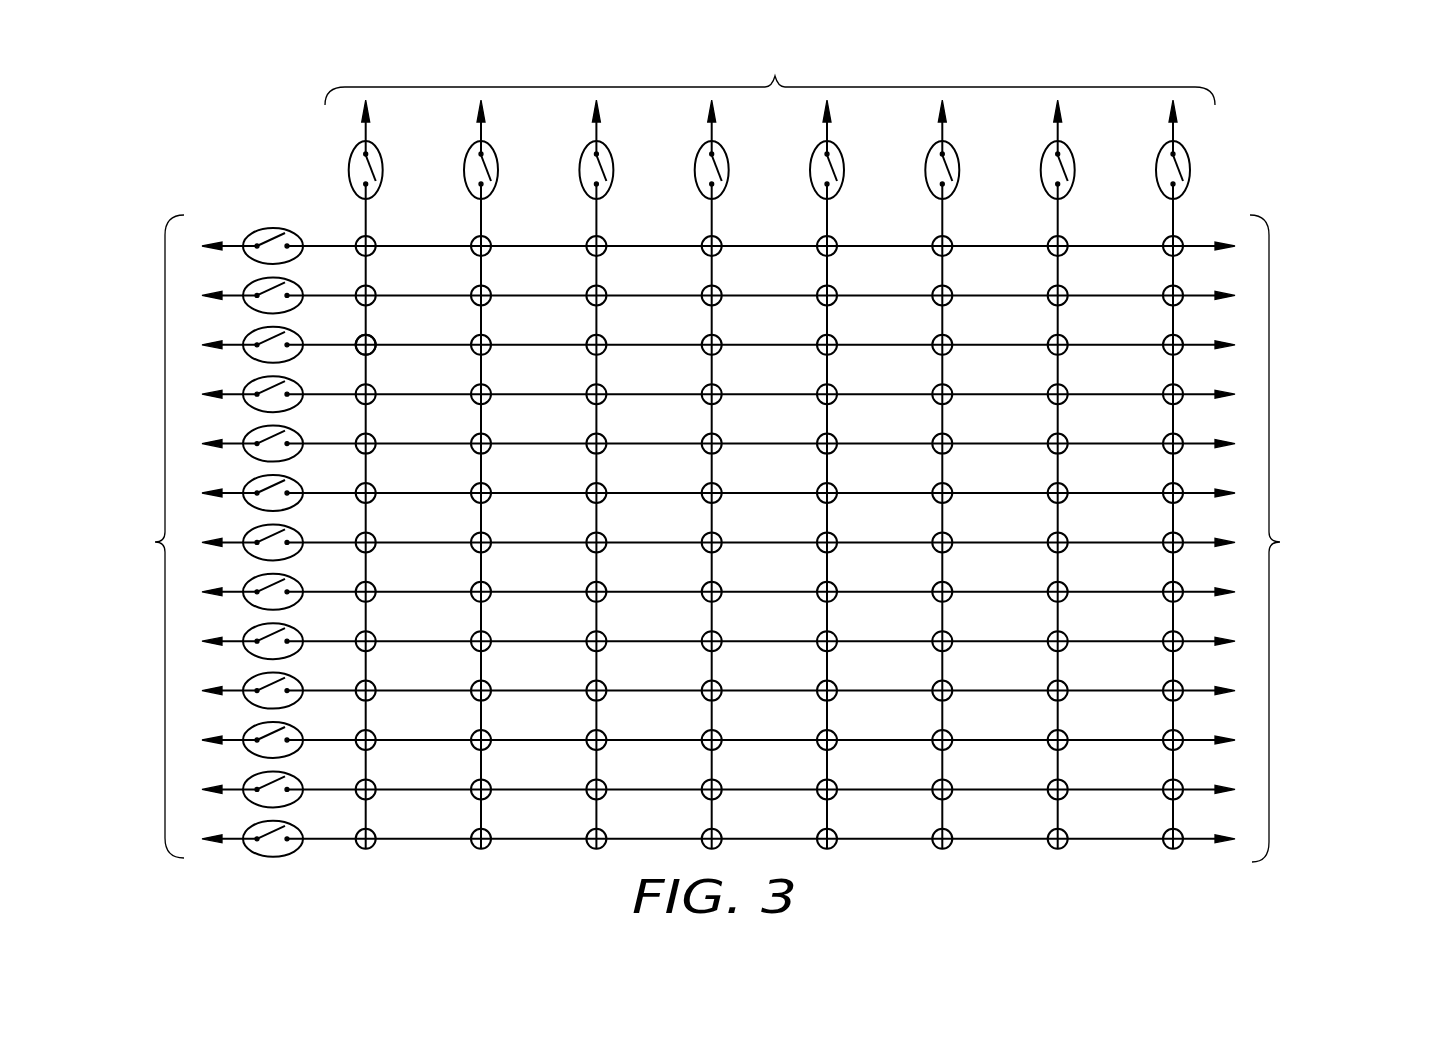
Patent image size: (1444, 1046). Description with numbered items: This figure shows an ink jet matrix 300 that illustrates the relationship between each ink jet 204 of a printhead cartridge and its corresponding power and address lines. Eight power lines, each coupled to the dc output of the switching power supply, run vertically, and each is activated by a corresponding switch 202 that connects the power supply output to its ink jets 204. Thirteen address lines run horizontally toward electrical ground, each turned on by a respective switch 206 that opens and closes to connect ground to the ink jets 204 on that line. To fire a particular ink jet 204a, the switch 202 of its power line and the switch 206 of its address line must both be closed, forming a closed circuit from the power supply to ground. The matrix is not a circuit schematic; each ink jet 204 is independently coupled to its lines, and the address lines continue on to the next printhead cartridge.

The ink jet matrix 300 is at (226, 147).
The switch 202 is at (383, 170).
The ink jet 204 is at (375, 255).
The ink jet 204a is at (372, 335).
The switch 206 is at (278, 227).